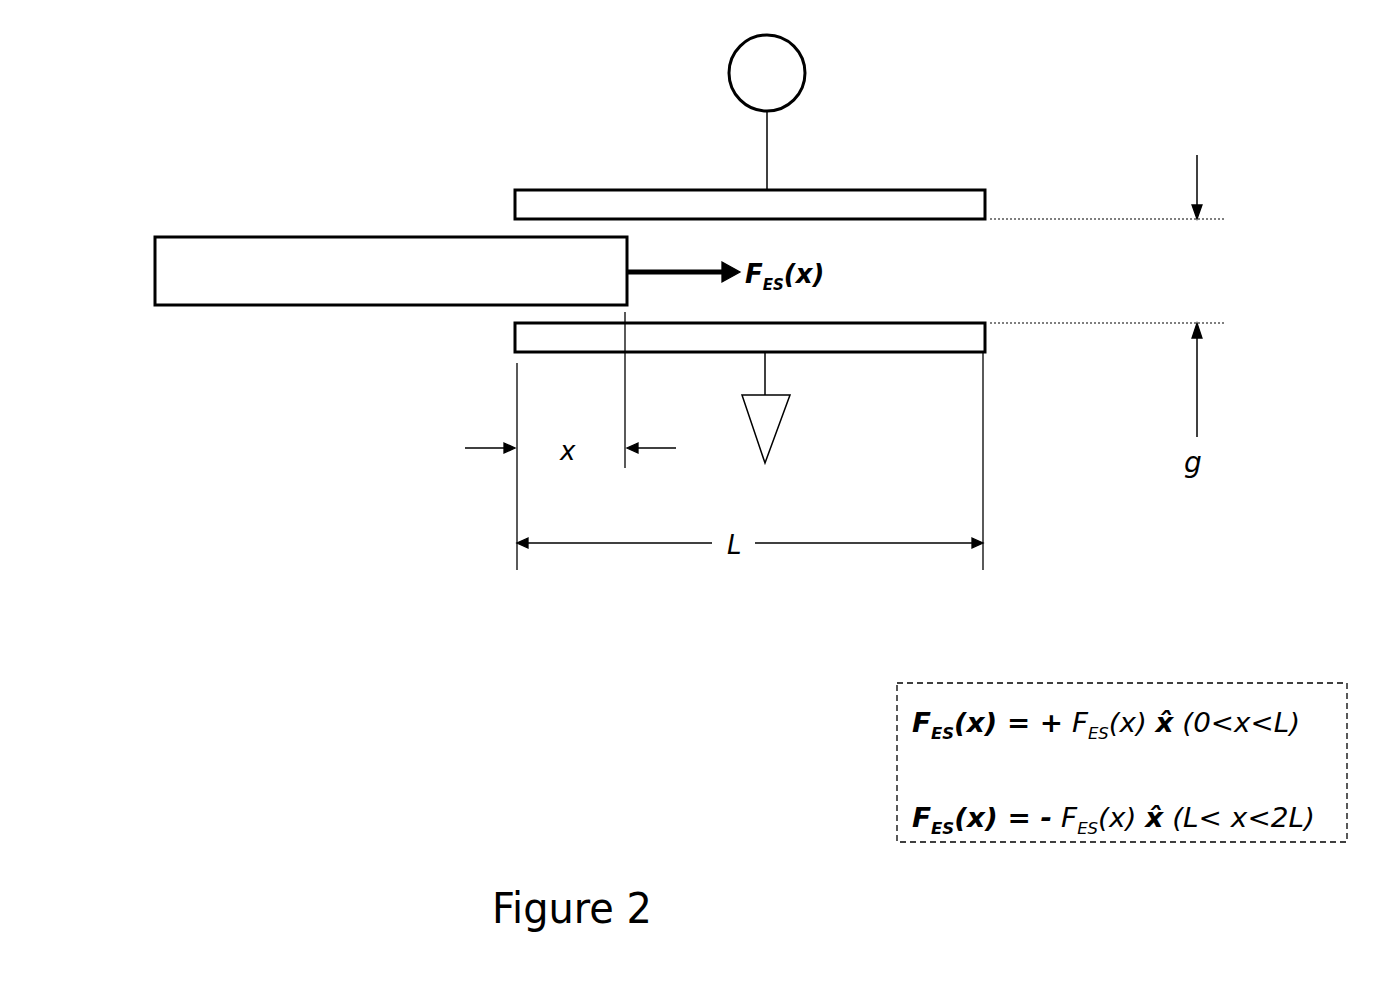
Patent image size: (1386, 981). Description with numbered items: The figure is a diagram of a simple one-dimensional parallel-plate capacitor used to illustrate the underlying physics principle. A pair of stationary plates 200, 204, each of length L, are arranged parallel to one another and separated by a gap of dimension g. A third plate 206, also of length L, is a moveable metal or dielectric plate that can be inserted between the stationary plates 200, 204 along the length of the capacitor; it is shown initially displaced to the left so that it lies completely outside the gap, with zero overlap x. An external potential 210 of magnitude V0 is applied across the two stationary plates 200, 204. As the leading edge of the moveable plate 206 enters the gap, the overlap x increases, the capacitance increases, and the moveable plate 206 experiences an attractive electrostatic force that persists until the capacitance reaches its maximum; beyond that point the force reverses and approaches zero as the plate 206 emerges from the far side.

The stationary plate 200 is at (988, 205).
The stationary plate 204 is at (988, 337).
The moveable plate 206 is at (220, 306).
The external potential 210 is at (805, 70).